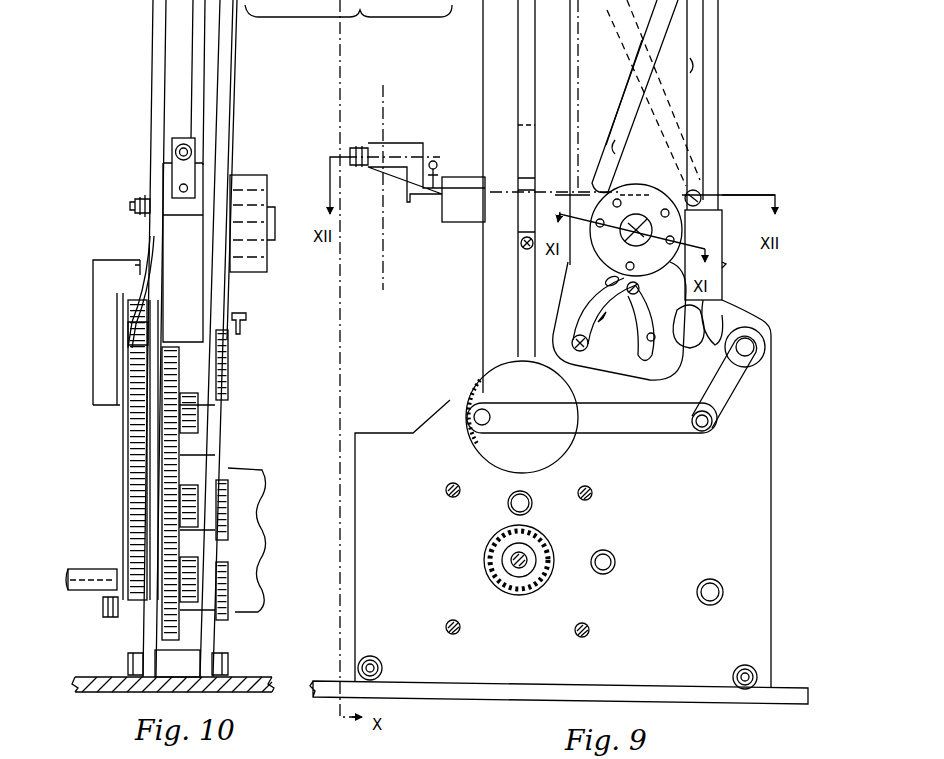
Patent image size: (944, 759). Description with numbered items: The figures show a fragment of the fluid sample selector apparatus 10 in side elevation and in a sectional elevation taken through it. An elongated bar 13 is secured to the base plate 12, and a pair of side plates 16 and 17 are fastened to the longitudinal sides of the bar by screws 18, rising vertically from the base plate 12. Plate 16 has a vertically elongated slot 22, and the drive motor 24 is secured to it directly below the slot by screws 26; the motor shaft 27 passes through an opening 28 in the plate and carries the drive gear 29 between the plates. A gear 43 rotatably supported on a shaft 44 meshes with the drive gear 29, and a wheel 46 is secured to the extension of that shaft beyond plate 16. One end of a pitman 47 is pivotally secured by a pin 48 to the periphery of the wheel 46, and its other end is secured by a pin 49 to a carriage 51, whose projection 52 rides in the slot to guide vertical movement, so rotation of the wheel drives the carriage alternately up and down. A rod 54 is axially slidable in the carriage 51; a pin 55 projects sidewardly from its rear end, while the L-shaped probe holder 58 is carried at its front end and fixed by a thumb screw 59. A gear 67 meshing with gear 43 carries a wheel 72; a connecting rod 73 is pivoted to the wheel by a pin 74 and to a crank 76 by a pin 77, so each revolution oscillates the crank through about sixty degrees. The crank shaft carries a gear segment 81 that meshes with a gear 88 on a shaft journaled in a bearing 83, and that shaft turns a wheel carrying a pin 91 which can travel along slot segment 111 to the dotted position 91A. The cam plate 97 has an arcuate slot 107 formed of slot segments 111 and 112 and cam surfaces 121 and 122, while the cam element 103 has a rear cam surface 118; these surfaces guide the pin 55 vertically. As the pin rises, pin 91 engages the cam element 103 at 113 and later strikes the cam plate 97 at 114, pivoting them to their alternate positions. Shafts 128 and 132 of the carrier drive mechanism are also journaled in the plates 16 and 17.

In FIG. 10, the fluid sample selector apparatus 10 is at (66, 114).
In FIG. 10, the base plate 12 is at (246, 690).
In FIG. 9, the base plate 12 is at (445, 695).
In FIG. 10, the elongated bar 13 is at (177, 663).
In FIG. 10, the side plate 16 is at (214, 62).
In FIG. 9, the side plate 16 is at (362, 576).
In FIG. 10, the side plate 17 is at (153, 62).
In FIG. 10, the screws 18 is at (130, 664).
In FIG. 9, the screws 18 is at (381, 666).
In FIG. 9, the vertically elongated slot 22 is at (525, 63).
In FIG. 10, the drive motor 24 is at (250, 604).
In FIG. 10, the screws 26 is at (196, 482).
In FIG. 9, the screws 26 is at (450, 485).
In FIG. 10, the motor shaft 27 is at (218, 556).
In FIG. 9, the motor shaft 27 is at (526, 556).
In FIG. 9, the opening 28 is at (487, 566).
In FIG. 10, the drive gear 29 is at (170, 546).
In FIG. 9, the drive gear 29 is at (495, 541).
In FIG. 10, the gear 43 is at (170, 488).
In FIG. 9, the shaft 44 is at (531, 500).
In FIG. 10, the wheel 46 is at (136, 444).
In FIG. 9, the wheel 46 is at (445, 411).
In FIG. 10, the pitman 47 is at (126, 404).
In FIG. 10, the pin 48 is at (104, 606).
In FIG. 10, the pin 49 is at (130, 210).
In FIG. 10, the carriage 51 is at (172, 200).
In FIG. 9, the carriage 51 is at (470, 178).
In FIG. 9, the projection 52 is at (525, 279).
In FIG. 9, the rod 54 is at (348, 8).
In FIG. 9, the pin 55 is at (700, 193).
In FIG. 10, the L-shaped probe holder 58 is at (198, 166).
In FIG. 9, the L-shaped probe holder 58 is at (398, 138).
In FIG. 9, the thumb screw 59 is at (433, 160).
In FIG. 10, the gear 67 is at (172, 410).
In FIG. 9, the gear 67 is at (478, 378).
In FIG. 9, the wheel 72 is at (490, 452).
In FIG. 9, the connecting rod 73 is at (592, 418).
In FIG. 9, the pin 74 is at (491, 401).
In FIG. 9, the crank 76 is at (728, 377).
In FIG. 9, the pin 77 is at (714, 433).
In FIG. 10, the gear segment 81 is at (146, 298).
In FIG. 10, the bearing 83 is at (100, 315).
In FIG. 10, the gear 88 is at (148, 331).
In FIG. 9, the pin 91 is at (576, 331).
In FIG. 9, the pin position 91A is at (599, 277).
In FIG. 9, the cam plate 97 is at (681, 101).
In FIG. 9, the cam element 103 is at (716, 67).
In FIG. 9, the arcuate slot 107 is at (645, 333).
In FIG. 9, the slot segment 111 is at (612, 294).
In FIG. 9, the slot segment 112 is at (656, 338).
In FIG. 9, the engagement point 113 is at (633, 276).
In FIG. 9, the strike point 114 is at (648, 288).
In FIG. 9, the rear cam surface 118 is at (700, 23).
In FIG. 9, the cam surface 121 is at (678, 63).
In FIG. 9, the cam surface 122 is at (636, 142).
In FIG. 9, the shaft 128 is at (611, 556).
In FIG. 9, the shaft 132 is at (712, 591).